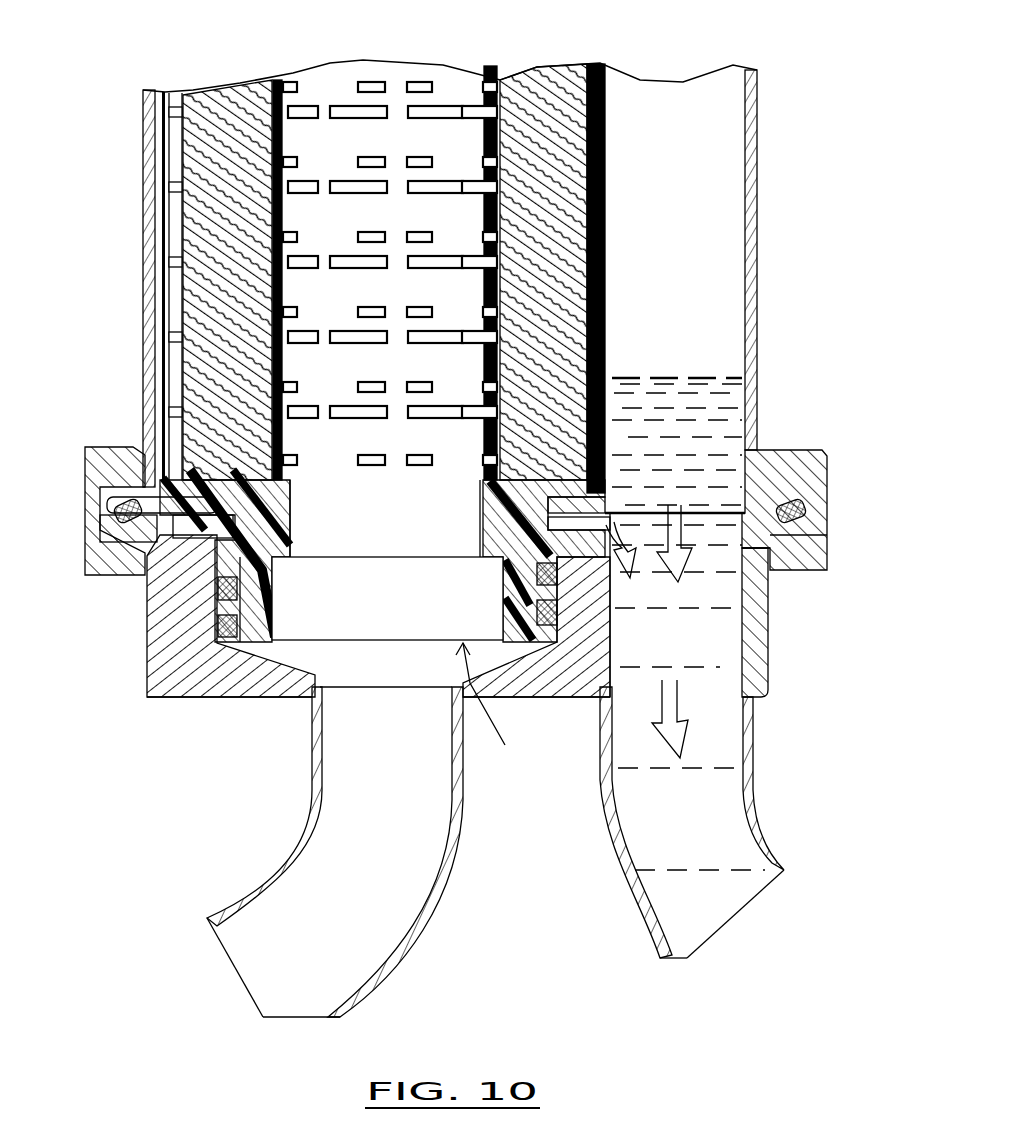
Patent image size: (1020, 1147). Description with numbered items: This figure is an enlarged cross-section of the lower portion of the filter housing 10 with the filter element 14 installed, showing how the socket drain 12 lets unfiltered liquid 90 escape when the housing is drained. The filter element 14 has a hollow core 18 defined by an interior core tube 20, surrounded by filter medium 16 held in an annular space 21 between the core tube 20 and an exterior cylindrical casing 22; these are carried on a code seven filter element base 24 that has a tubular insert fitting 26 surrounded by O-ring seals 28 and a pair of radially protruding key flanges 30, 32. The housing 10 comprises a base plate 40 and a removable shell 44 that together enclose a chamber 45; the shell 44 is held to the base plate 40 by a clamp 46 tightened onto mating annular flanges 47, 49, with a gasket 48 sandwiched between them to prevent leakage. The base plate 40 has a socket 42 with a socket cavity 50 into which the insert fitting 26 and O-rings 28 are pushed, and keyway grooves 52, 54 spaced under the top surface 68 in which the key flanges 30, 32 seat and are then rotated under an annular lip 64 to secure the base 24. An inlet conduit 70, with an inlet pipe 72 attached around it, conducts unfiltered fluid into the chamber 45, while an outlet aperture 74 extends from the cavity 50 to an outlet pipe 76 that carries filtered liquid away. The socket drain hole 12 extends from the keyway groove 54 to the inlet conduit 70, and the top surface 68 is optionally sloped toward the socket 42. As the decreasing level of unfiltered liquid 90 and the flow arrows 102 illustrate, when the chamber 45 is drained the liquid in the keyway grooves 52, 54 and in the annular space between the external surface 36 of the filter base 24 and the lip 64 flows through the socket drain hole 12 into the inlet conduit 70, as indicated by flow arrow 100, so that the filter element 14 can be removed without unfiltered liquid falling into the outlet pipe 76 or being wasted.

The filter housing 10 is at (138, 60).
The socket drain hole 12 is at (607, 528).
The filter element 14 is at (432, 63).
The filter medium 16 is at (548, 96).
The hollow core 18 is at (408, 150).
The core tube 20 is at (331, 66).
The annular space 21 is at (567, 118).
The casing 22 is at (612, 140).
The filter element base 24 is at (108, 475).
The insert fitting 26 is at (262, 705).
The O-ring seals 28 is at (170, 600).
The key flange 30 is at (147, 585).
The key flange 32 is at (600, 680).
The external surface 36 is at (500, 492).
The base plate 40 is at (140, 678).
The socket 42 is at (501, 707).
The shell 44 is at (760, 102).
The chamber 45 is at (690, 163).
The clamp 46 is at (95, 462).
The annular flange 47 is at (800, 522).
The gasket 48 is at (110, 515).
The annular flange 49 is at (800, 507).
The socket cavity 50 is at (402, 675).
The keyway groove 52 is at (165, 560).
The keyway groove 54 is at (505, 545).
The annular lip 64 is at (620, 490).
The top surface 68 is at (640, 480).
The inlet conduit 70 is at (738, 695).
The inlet pipe 72 is at (753, 797).
The outlet aperture 74 is at (335, 705).
The outlet pipe 76 is at (312, 810).
The unfiltered liquid 90 is at (713, 378).
The flow arrow 100 is at (670, 537).
The flow arrows 102 is at (655, 513).